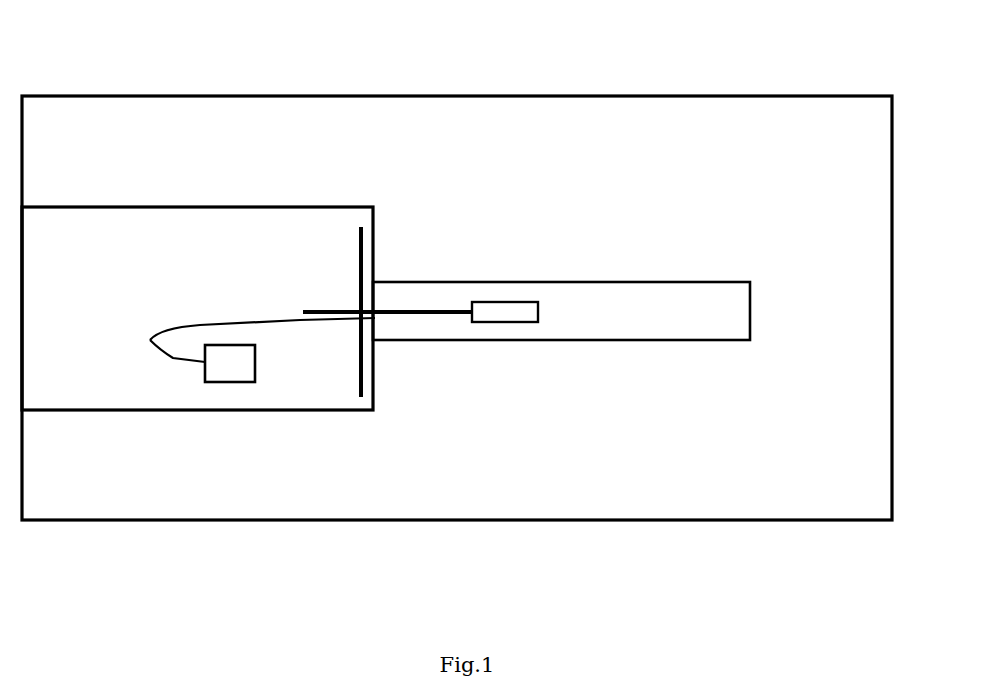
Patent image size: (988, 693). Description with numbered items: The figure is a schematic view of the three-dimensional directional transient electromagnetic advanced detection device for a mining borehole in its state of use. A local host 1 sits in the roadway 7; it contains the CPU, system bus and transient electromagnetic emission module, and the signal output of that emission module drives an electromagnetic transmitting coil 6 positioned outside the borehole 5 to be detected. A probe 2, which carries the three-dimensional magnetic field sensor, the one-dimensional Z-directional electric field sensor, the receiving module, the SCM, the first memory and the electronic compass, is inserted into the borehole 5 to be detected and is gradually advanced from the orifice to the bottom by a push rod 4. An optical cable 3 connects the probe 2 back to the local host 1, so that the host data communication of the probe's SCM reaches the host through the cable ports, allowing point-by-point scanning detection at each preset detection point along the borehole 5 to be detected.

The local host 1 is at (238, 367).
The probe 2 is at (518, 315).
The optical cable 3 is at (173, 358).
The push rod 4 is at (350, 306).
The borehole to be detected 5 is at (732, 310).
The electromagnetic transmitting coil 6 is at (363, 398).
The roadway 7 is at (165, 243).